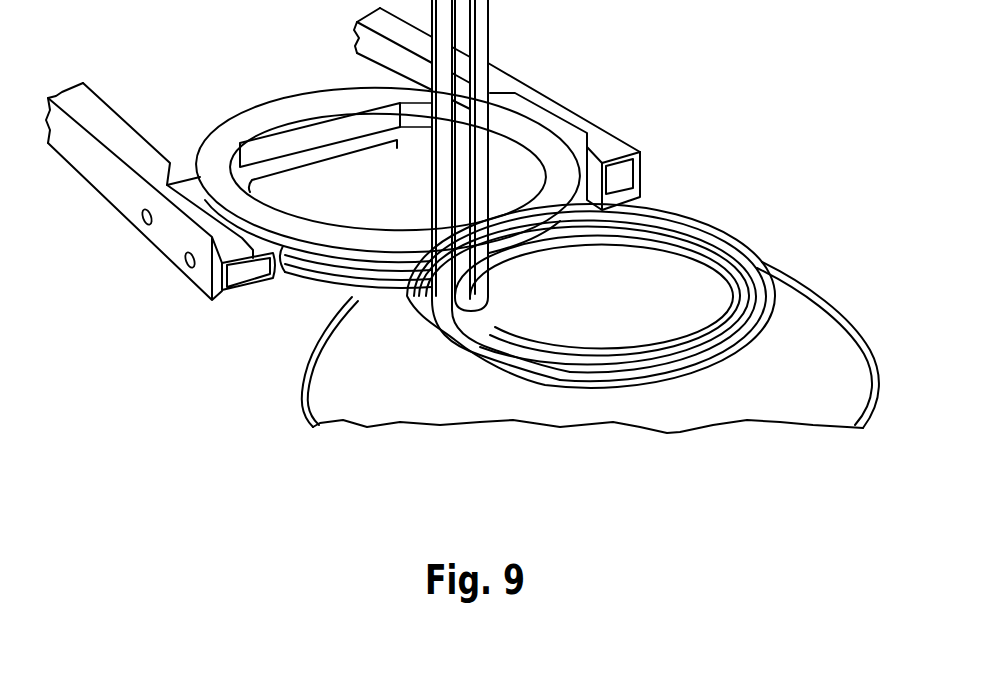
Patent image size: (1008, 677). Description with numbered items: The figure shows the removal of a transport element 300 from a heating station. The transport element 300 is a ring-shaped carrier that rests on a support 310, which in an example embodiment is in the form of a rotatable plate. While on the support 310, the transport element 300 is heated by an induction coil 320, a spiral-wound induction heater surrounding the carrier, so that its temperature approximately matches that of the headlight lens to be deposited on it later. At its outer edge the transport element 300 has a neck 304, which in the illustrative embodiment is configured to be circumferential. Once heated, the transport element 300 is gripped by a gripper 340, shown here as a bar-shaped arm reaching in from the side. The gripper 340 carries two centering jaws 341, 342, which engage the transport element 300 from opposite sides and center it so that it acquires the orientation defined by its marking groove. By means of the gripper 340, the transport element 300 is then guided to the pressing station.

The transport element 300 is at (293, 108).
The neck 304 is at (313, 263).
The support 310 is at (402, 385).
The induction coil 320 is at (665, 375).
The gripper 340 is at (168, 238).
The centering jaw 341 is at (235, 275).
The centering jaw 342 is at (618, 182).